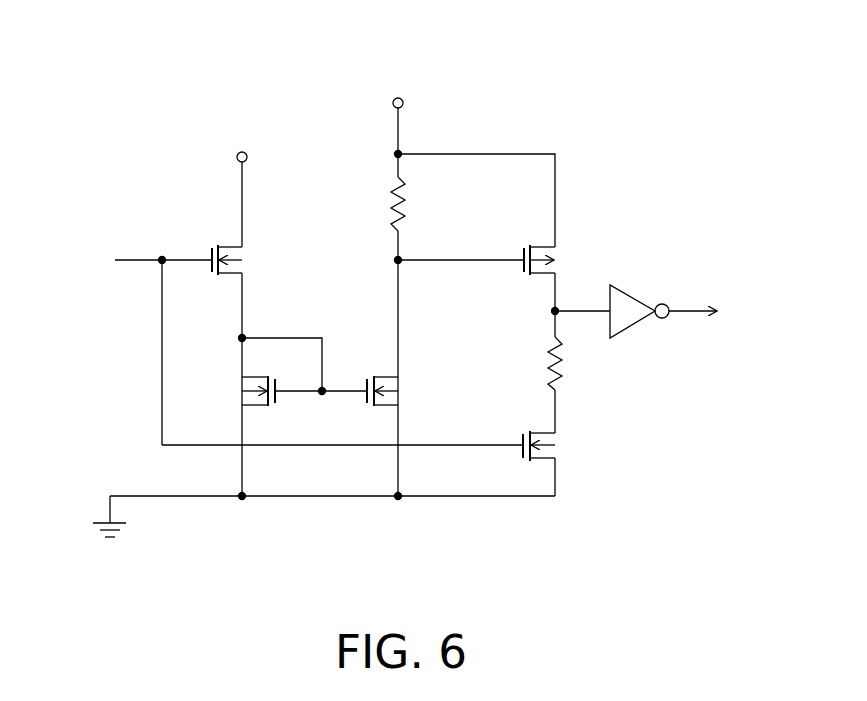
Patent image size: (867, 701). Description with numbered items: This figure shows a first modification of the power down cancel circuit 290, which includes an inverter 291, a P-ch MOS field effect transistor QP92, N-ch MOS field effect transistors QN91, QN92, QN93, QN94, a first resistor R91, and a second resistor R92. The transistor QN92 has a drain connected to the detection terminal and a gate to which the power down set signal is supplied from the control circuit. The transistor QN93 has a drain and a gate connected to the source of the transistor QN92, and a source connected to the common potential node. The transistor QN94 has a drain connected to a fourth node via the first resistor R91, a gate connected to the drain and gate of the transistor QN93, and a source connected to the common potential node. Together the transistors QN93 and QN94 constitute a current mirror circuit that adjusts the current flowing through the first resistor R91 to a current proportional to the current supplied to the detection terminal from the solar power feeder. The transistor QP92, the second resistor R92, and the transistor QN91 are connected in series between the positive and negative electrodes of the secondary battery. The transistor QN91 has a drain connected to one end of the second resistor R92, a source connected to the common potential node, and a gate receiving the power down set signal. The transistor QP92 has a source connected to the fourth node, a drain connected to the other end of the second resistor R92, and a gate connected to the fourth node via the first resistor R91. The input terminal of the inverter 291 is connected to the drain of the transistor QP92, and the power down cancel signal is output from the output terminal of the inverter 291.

The power down cancel circuit 290 is at (335, 29).
The inverter 291 is at (633, 297).
The N-ch MOS field effect transistor QN92 is at (262, 260).
The N-ch MOS field effect transistor QN93 is at (225, 391).
The N-ch MOS field effect transistor QN94 is at (419, 391).
The P-ch MOS field effect transistor QP92 is at (575, 260).
The N-ch MOS field effect transistor QN91 is at (573, 446).
The first resistor R91 is at (425, 204).
The second resistor R92 is at (580, 363).